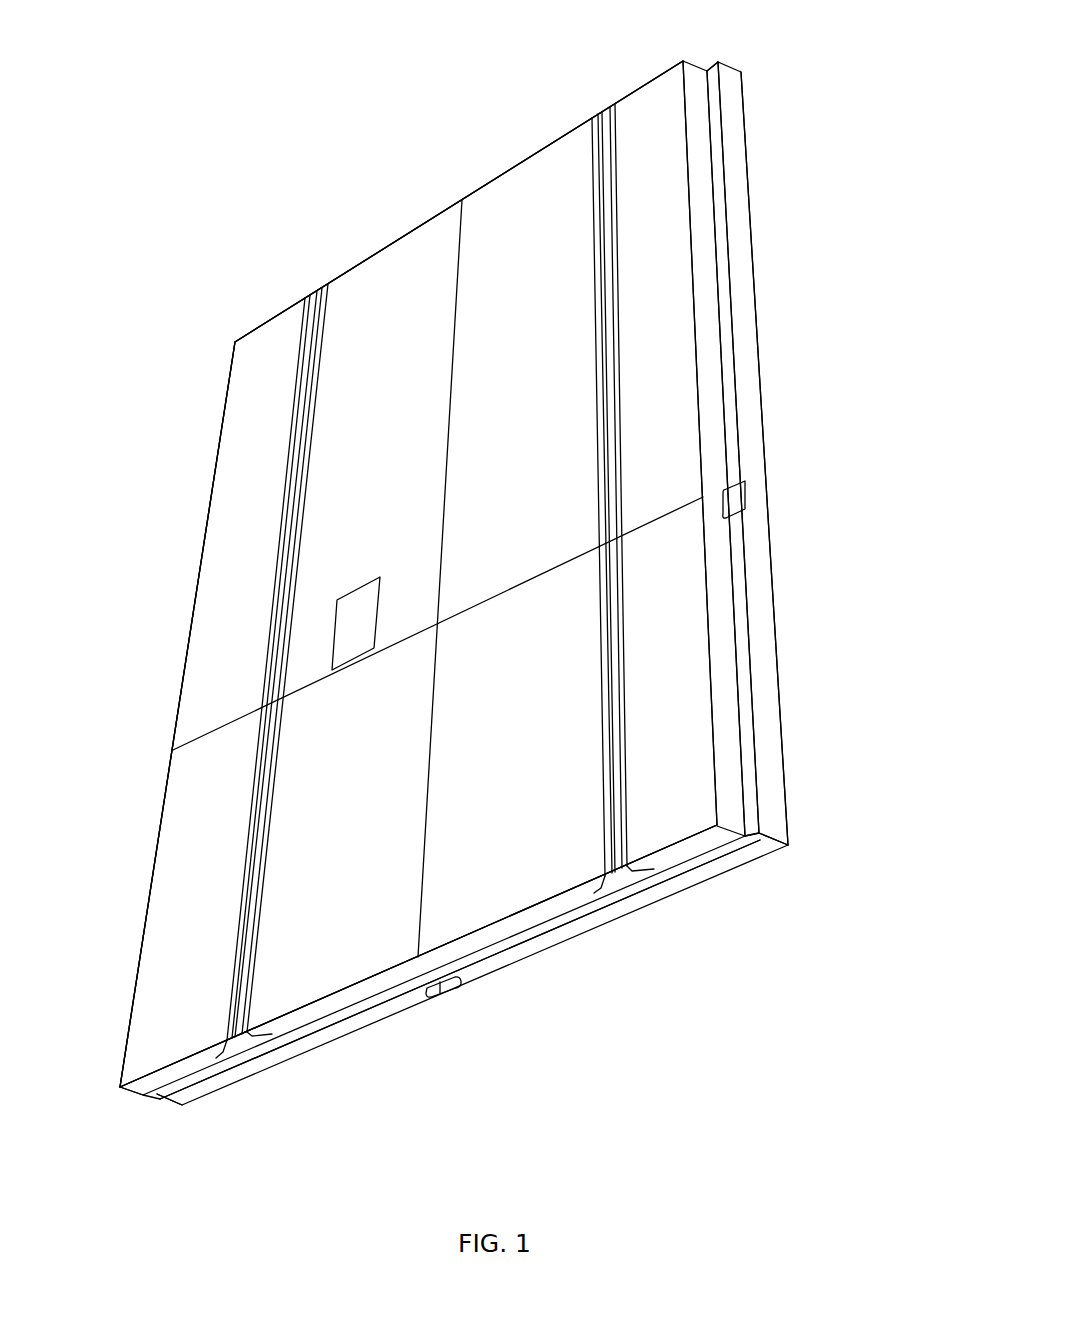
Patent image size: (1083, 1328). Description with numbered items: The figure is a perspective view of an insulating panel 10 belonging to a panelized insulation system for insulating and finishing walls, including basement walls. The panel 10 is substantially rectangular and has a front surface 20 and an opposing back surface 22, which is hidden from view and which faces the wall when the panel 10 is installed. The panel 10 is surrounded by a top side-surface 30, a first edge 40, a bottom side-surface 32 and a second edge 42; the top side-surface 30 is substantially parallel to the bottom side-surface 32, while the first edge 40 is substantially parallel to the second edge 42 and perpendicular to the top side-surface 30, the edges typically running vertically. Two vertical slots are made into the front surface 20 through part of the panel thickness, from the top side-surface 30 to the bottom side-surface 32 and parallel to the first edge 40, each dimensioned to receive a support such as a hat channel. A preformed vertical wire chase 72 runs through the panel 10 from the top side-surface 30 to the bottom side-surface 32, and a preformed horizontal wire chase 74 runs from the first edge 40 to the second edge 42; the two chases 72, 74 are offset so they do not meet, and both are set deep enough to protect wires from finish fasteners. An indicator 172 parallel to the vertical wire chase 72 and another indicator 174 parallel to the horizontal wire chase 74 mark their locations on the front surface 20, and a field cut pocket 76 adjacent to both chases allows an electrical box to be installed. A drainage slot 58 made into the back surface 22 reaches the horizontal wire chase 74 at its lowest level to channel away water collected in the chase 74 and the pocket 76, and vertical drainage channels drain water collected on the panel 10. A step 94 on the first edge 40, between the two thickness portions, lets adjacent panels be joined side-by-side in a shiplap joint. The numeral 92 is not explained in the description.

The insulating panel 10 is at (460, 80).
The front surface 20 is at (197, 1008).
The back surface 22 is at (245, 1085).
The top side-surface 30 is at (383, 221).
The bottom side-surface 32 is at (400, 1030).
The first edge 40 is at (766, 197).
The second edge 42 is at (140, 884).
The drainage slot or channel 58 is at (761, 510).
The vertical wire chase 72 is at (441, 995).
The horizontal wire chase 74 is at (745, 482).
The field cut pocket 76 is at (337, 636).
The groove 92 is at (690, 869).
The step 94 is at (707, 62).
The indicator 172 is at (464, 222).
The indicator 174 is at (199, 736).